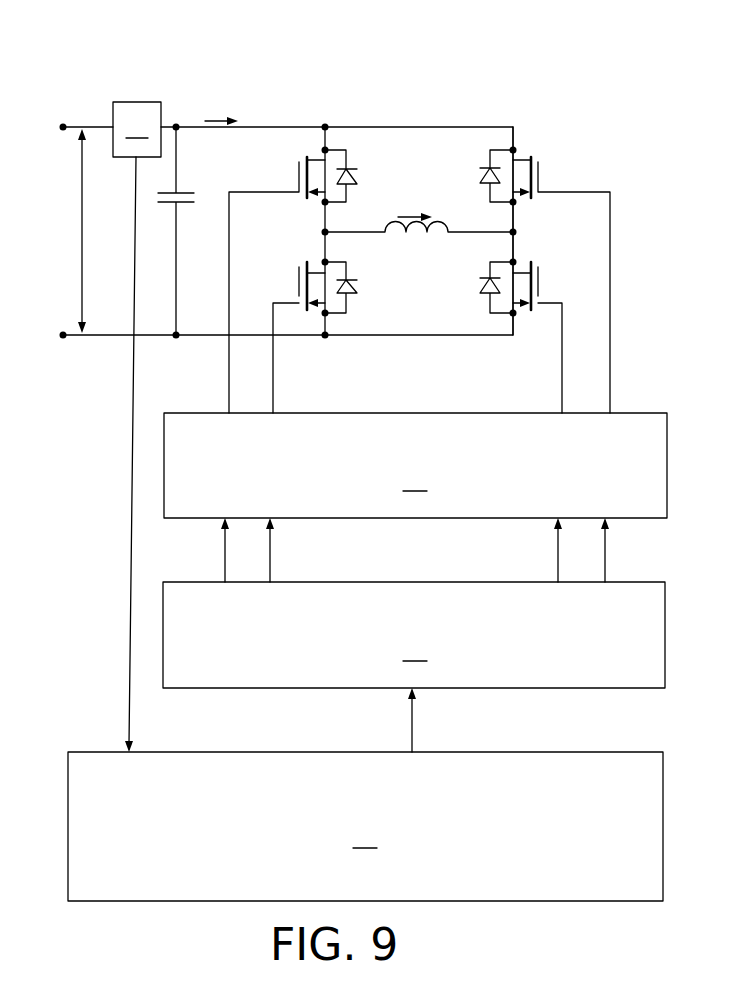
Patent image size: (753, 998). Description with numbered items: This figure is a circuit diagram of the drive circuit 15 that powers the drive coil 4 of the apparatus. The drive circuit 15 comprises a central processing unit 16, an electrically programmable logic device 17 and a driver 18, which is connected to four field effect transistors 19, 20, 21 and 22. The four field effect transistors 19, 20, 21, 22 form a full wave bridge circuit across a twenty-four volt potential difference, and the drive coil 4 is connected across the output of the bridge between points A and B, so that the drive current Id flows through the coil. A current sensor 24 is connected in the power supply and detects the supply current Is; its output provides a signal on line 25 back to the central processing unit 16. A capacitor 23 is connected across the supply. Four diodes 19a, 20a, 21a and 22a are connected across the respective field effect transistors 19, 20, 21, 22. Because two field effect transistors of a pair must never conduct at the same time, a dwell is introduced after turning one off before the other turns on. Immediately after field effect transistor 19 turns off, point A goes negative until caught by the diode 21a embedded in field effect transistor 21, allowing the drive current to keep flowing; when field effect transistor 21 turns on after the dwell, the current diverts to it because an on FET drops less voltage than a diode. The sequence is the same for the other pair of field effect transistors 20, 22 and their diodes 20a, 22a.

The drive coil 4 is at (437, 223).
The drive circuit 15 is at (347, 500).
The central processing unit 16 is at (102, 917).
The electrically programmable logic device 17 is at (414, 603).
The driver 18 is at (415, 465).
The field effect transistor 19 is at (298, 180).
The diode 19a is at (358, 178).
The field effect transistor 20 is at (545, 177).
The diode 20a is at (479, 178).
The field effect transistor 21 is at (296, 292).
The diode 21a is at (356, 297).
The field effect transistor 22 is at (545, 287).
The diode 22a is at (481, 295).
The capacitor 23 is at (185, 203).
The current sensor 24 is at (138, 97).
The line 25 is at (130, 553).